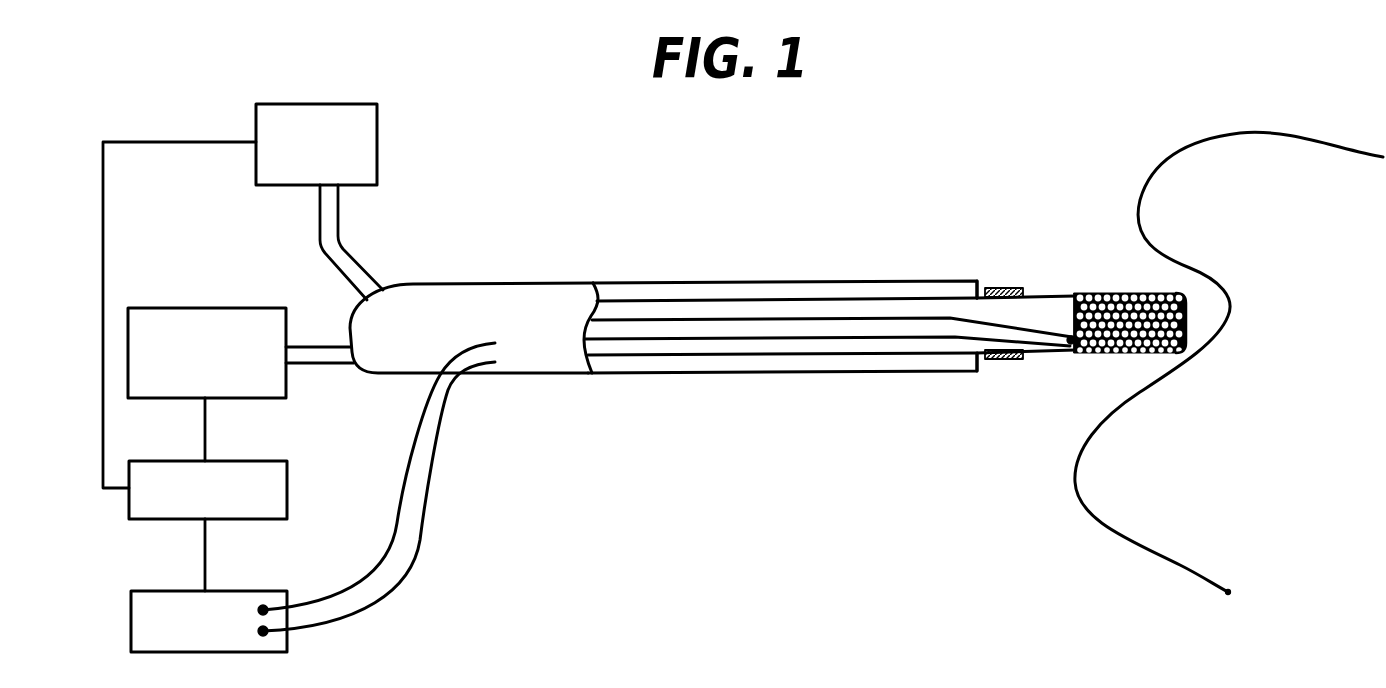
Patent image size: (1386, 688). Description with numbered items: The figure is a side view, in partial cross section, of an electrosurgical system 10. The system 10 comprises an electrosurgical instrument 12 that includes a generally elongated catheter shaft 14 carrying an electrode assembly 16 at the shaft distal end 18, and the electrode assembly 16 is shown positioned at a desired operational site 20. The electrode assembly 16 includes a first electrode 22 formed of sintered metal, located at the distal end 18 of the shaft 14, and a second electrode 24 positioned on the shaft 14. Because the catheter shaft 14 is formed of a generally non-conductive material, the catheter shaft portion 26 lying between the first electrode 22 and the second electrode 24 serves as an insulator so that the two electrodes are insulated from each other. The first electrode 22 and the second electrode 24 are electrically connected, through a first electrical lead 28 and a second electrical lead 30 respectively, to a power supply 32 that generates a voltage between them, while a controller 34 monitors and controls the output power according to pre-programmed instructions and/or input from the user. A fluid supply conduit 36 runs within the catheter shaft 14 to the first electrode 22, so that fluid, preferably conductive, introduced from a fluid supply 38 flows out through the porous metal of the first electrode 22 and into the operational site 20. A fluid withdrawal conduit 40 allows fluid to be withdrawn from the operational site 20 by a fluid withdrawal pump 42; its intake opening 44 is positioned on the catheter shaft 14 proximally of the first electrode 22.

The system 10 is at (1030, 100).
The electrosurgical instrument 12 is at (733, 280).
The shaft 14 is at (722, 372).
The electrode assembly 16 is at (1043, 296).
The shaft distal end 18 is at (1170, 354).
The operational site 20 is at (1188, 267).
The first electrode 22 is at (1113, 292).
The second electrode 24 is at (993, 288).
The catheter shaft portion 26 is at (1047, 360).
The first electrical lead 28 is at (853, 317).
The second electrical lead 30 is at (822, 340).
The power supply 32 is at (129, 633).
The controller 34 is at (129, 502).
The fluid supply conduit 36 is at (668, 310).
The fluid supply 38 is at (377, 142).
The fluid withdrawal conduit 40 is at (668, 362).
The fluid withdrawal pump 42 is at (212, 308).
The intake opening 44 is at (977, 372).